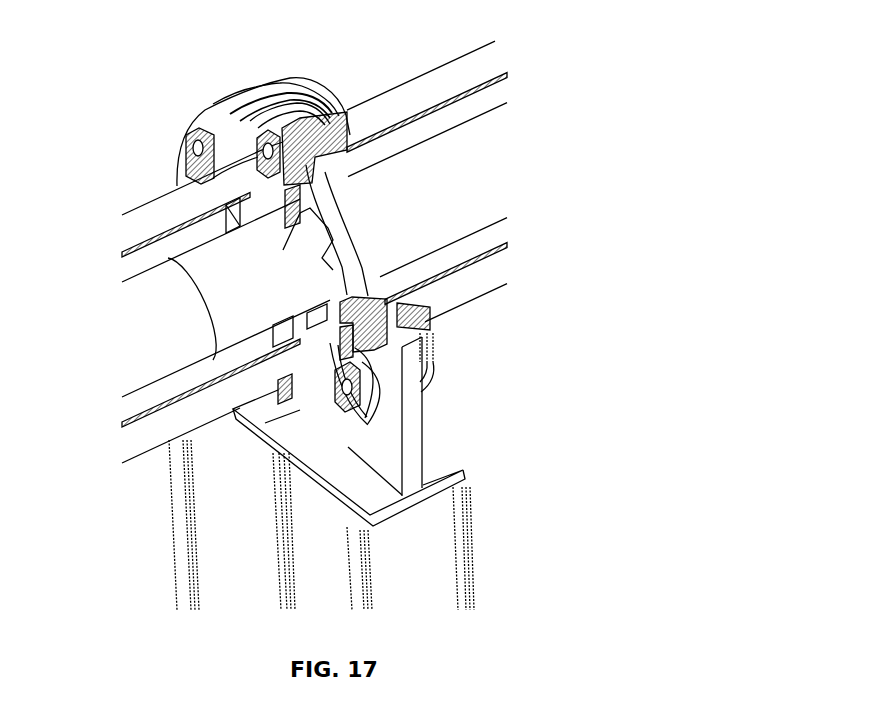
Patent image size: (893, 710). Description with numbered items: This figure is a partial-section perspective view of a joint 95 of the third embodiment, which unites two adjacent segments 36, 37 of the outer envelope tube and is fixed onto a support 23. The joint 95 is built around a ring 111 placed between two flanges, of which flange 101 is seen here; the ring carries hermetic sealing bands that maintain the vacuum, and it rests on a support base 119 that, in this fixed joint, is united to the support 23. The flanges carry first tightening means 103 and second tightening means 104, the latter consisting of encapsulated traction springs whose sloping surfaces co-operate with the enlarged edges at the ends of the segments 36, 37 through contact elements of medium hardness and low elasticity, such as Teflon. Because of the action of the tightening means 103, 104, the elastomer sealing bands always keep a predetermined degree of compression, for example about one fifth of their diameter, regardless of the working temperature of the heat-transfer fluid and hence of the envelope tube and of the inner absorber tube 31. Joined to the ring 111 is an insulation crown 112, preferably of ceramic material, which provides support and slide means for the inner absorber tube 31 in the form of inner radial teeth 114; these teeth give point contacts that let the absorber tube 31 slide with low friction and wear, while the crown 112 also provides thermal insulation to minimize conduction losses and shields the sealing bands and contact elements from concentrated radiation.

The support 23 is at (463, 558).
The inner absorber tube 31 is at (147, 325).
The segment of outer envelope tube 36 is at (125, 222).
The segment of outer envelope tube 37 is at (493, 67).
The joint 95 is at (123, 110).
The flange 101 is at (213, 102).
The first tightening means 103 is at (192, 148).
The second tightening means 104 is at (328, 123).
The ring 111 is at (272, 97).
The insulation crown 112 is at (350, 220).
The inner radial teeth 114 is at (328, 265).
The support base 119 is at (417, 425).